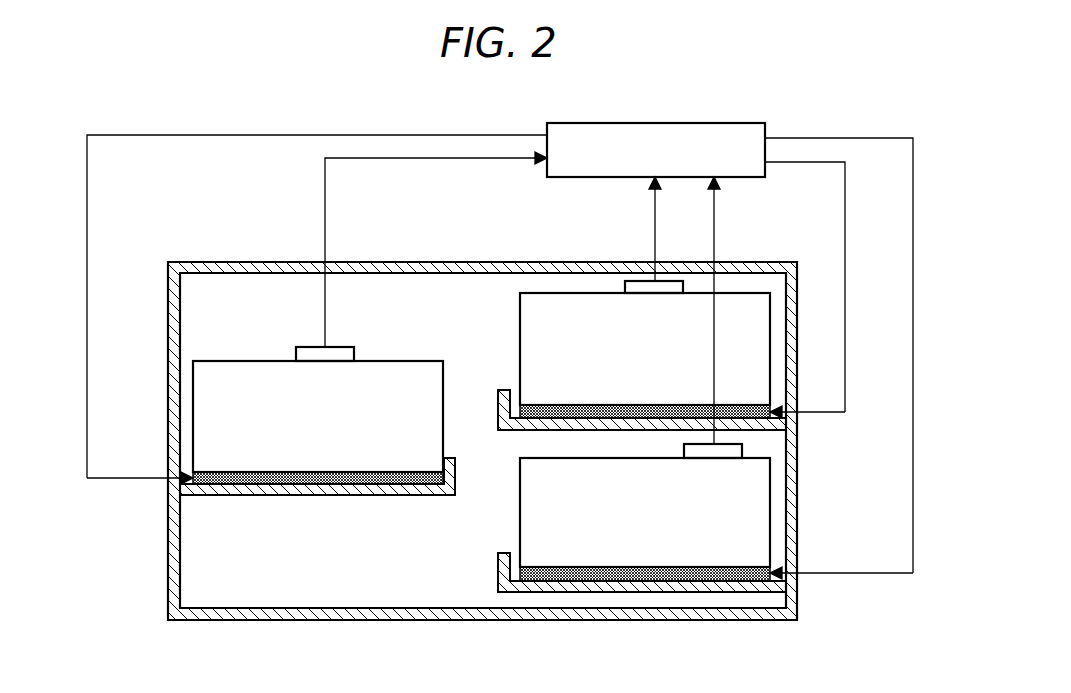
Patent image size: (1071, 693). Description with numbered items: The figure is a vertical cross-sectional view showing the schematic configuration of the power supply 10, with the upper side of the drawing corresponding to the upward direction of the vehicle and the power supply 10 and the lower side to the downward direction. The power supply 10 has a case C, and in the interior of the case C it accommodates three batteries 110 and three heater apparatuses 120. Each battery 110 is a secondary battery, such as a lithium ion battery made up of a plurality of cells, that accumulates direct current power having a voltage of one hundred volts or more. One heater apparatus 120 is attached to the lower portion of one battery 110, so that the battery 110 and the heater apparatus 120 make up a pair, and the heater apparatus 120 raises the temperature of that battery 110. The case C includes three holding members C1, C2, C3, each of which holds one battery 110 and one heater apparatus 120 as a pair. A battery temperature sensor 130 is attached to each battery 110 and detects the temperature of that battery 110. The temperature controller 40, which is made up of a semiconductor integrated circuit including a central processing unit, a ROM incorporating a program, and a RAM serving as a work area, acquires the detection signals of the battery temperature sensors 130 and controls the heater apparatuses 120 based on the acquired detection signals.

The power supply 10 is at (214, 220).
The temperature controller 40 is at (673, 102).
The battery 110 is at (420, 367).
The heater apparatus 120 is at (395, 482).
The battery temperature sensor 130 is at (338, 345).
The case C is at (423, 262).
The holding member C1 is at (243, 495).
The holding member C2 is at (512, 431).
The holding member C3 is at (522, 593).